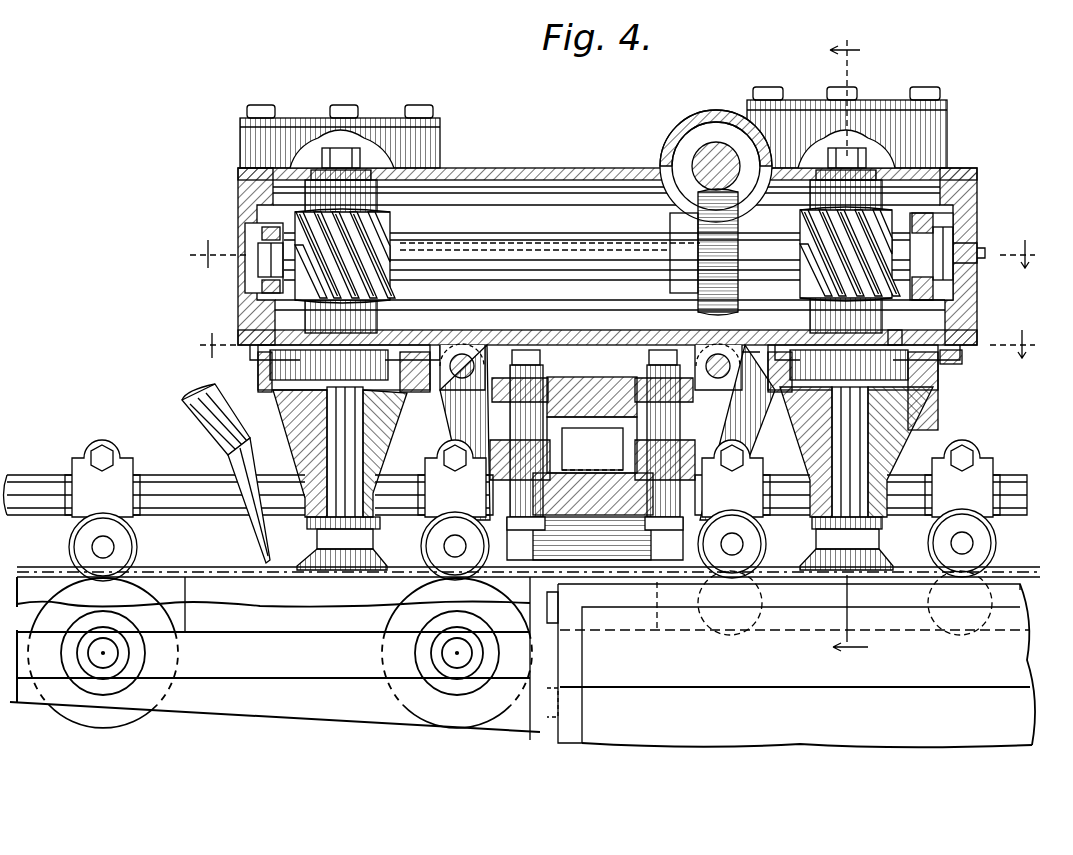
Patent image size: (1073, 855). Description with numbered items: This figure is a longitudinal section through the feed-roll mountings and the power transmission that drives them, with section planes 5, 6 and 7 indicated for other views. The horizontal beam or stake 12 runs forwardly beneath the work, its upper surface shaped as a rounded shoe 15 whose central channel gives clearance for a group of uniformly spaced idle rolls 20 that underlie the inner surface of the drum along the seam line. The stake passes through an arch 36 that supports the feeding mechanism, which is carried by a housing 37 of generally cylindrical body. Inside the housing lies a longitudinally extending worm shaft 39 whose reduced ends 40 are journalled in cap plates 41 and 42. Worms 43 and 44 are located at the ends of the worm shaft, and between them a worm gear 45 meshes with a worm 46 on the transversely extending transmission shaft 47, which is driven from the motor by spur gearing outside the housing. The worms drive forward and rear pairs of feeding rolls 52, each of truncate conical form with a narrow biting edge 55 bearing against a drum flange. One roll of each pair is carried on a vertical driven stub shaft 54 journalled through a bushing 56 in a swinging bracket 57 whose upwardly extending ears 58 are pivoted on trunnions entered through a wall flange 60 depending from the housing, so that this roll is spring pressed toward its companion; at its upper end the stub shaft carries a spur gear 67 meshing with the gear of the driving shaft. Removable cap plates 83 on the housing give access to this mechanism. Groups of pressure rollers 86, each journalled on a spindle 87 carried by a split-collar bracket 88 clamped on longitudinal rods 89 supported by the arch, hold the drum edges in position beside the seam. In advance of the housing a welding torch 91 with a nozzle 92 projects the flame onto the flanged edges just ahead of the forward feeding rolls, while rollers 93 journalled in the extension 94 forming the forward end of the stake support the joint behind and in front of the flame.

The section line 5- 5 is at (849, 342).
The section line 6- 6 is at (610, 254).
The section line 7- 7 is at (612, 344).
The beam or stake 12 is at (791, 659).
The rounded shoe 15 is at (1020, 595).
The idle rolls 20 is at (990, 616).
The arch 36 is at (592, 455).
The housing 37 is at (579, 160).
The worm shaft 39 is at (545, 270).
The reduced ends 40 is at (262, 262).
The cap plate 41 is at (977, 200).
The cap plate 42 is at (238, 208).
The worm 43 is at (812, 292).
The worm 44 is at (385, 248).
The worm gear 45 is at (705, 296).
The worm 46 is at (735, 175).
The transmission shaft 47 is at (712, 157).
The feeding rolls 52 is at (335, 549).
The driven stub shaft 54 is at (345, 470).
The biting edge 55 is at (305, 558).
The bushing 56 is at (800, 455).
The swinging bracket 57 is at (388, 462).
The ears 58 is at (760, 398).
The wall flange 60 is at (738, 340).
The spur gear 67 is at (896, 345).
The cap plates 83 is at (355, 125).
The pressure rollers 86 is at (125, 550).
The spindle 87 is at (100, 549).
The bracket 88 is at (125, 482).
The rods 89 is at (38, 485).
The welding torch 91 is at (183, 416).
The nozzle 92 is at (258, 530).
The rollers 93 is at (152, 622).
The extension 94 is at (275, 658).